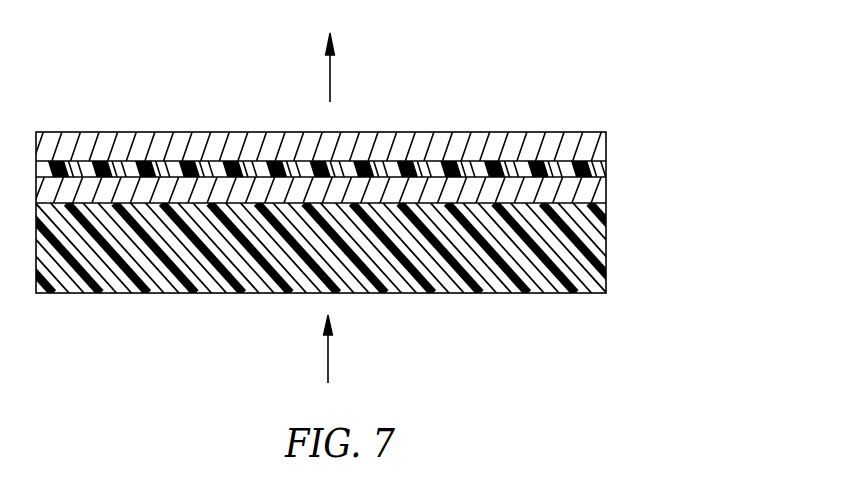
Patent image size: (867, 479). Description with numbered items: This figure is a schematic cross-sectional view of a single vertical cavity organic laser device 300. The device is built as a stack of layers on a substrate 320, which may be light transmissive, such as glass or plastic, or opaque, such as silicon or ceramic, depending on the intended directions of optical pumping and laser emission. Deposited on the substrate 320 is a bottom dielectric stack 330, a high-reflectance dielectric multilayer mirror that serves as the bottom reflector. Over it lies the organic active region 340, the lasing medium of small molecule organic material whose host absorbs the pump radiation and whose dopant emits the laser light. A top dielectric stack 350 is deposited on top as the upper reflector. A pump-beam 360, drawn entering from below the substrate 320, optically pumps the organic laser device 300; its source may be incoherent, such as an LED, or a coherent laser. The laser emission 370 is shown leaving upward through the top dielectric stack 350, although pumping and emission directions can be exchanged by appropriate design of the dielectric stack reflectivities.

The organic laser device 300 is at (378, 168).
The substrate 320 is at (606, 247).
The bottom dielectric stack 330 is at (606, 190).
The organic active region 340 is at (606, 168).
The top dielectric stack 350 is at (606, 140).
The pump-beam 360 is at (328, 355).
The laser emission 370 is at (330, 75).